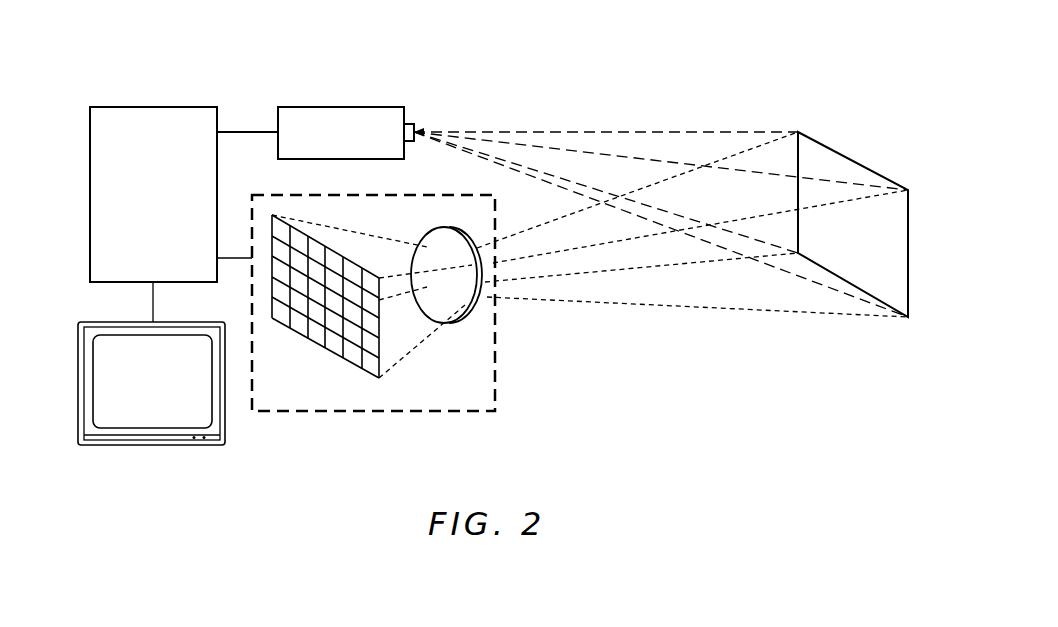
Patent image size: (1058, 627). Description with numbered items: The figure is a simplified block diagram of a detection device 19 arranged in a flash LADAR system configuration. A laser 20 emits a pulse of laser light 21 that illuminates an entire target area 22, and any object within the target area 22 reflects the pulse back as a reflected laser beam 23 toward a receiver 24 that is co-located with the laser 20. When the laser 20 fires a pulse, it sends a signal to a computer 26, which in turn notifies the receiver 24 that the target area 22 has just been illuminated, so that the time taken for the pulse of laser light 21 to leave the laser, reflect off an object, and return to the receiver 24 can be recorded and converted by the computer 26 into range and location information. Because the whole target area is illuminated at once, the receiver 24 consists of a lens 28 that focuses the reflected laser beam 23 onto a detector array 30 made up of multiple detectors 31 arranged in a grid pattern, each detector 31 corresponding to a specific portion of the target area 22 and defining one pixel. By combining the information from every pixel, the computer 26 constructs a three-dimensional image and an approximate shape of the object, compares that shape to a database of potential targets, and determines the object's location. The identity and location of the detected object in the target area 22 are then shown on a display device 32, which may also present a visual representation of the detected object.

The detection device 19 is at (104, 62).
The laser 20 is at (343, 106).
The pulse of laser light 21 is at (578, 130).
The target area 22 is at (843, 152).
The reflected laser beam 23 is at (632, 300).
The receiver 24 is at (378, 430).
The computer 26 is at (153, 106).
The lens 28 is at (459, 308).
The detector array 30 is at (312, 345).
The detector 31 is at (352, 358).
The display device 32 is at (151, 447).